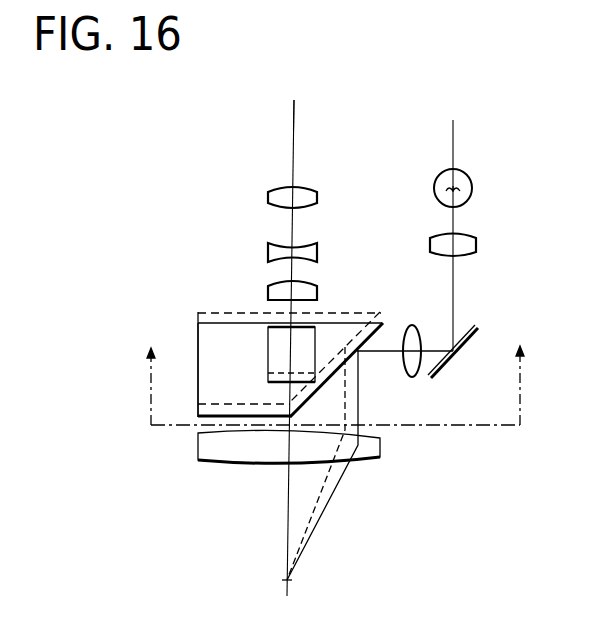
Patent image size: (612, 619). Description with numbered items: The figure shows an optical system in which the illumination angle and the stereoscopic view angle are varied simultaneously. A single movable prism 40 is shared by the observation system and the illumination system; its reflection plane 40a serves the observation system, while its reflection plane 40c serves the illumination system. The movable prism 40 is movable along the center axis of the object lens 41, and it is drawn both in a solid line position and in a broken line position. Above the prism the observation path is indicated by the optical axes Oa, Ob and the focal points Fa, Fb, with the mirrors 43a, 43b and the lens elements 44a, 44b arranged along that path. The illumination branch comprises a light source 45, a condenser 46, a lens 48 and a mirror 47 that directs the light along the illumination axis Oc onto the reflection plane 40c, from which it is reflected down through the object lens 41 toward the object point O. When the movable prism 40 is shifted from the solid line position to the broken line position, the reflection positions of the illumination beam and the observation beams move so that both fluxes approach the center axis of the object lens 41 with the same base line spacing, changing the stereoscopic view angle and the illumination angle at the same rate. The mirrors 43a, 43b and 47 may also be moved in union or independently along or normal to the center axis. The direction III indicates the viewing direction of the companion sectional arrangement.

The movable prism 40 is at (198, 324).
The reflection plane 40a is at (200, 352).
The reflection plane 40c is at (320, 387).
The object lens 41 is at (200, 452).
The mirror 43a is at (338, 325).
The mirror 43b is at (307, 353).
The relay lens system 44a is at (238, 243).
The relay lens system 44b is at (261, 187).
The light source 45 is at (472, 183).
The condenser lens 46 is at (465, 245).
The mirror 47 is at (478, 328).
The projection lens 48 is at (414, 377).
The object point O is at (291, 579).
The optical axis Oa is at (343, 348).
The optical axis Ob is at (294, 132).
The illumination optical axis Oc is at (453, 132).
The focal point Fa is at (294, 99).
The focal point Fb is at (294, 99).
The viewing direction III is at (127, 348).